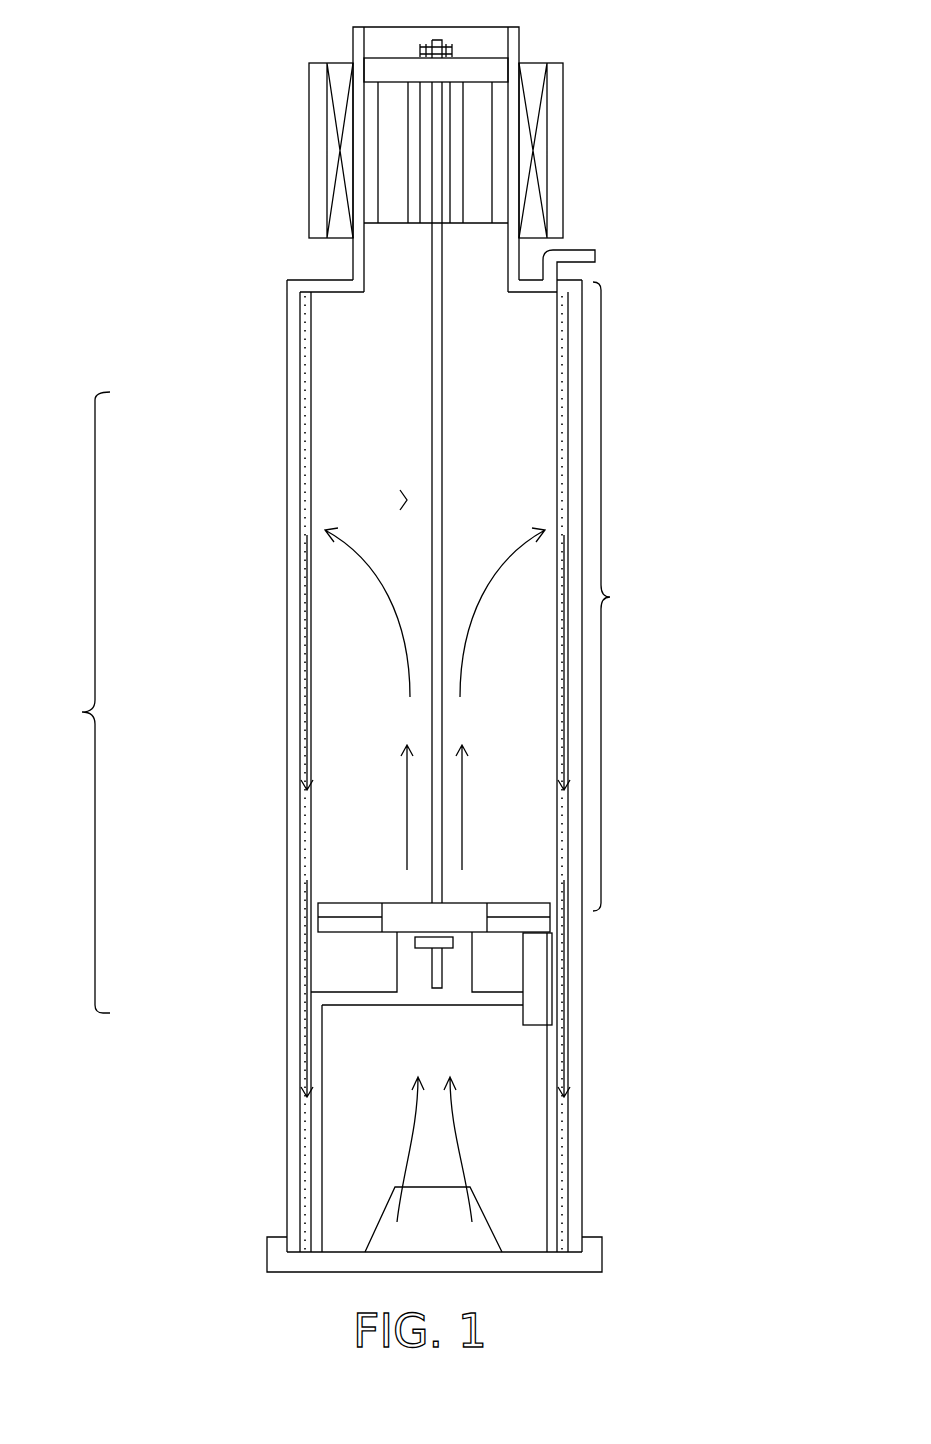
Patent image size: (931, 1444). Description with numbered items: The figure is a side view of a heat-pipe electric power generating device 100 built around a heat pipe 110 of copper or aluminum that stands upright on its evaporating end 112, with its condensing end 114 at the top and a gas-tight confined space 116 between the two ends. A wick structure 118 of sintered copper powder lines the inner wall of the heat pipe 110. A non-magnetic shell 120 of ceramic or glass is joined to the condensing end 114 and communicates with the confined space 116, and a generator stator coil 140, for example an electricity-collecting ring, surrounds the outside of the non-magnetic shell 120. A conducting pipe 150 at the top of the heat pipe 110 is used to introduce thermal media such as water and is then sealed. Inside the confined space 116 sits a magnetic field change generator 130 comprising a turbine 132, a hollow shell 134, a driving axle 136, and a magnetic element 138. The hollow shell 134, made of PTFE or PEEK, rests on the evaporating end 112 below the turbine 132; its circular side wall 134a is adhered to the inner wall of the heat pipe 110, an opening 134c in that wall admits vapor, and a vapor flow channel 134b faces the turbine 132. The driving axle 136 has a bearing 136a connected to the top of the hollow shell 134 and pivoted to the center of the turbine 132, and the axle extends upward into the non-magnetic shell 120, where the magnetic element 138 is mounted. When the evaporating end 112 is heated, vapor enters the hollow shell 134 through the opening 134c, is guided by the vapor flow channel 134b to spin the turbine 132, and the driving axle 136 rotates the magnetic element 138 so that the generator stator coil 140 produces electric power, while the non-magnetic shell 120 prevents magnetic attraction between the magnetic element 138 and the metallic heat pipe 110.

The heat-pipe electric power generating device 100 is at (762, 1278).
The heat pipe 110 is at (292, 628).
The evaporating end 112 is at (608, 1237).
The condensing end 114 is at (623, 596).
The confined space 116 is at (404, 500).
The wick structure 118 is at (302, 817).
The non-magnetic shell 120 is at (392, 47).
The magnetic field change generator 130 is at (72, 702).
The turbine 132 is at (341, 912).
The hollow shell 134 is at (354, 1000).
The circular side wall 134a is at (552, 1162).
The vapor flow channel 134b is at (549, 984).
The opening 134c is at (440, 1199).
The driving axle 136 is at (432, 717).
The bearing 136a is at (422, 945).
The magnetic element 138 is at (415, 203).
The generator stator coil 140 is at (553, 75).
The conducting pipe 150 is at (582, 257).